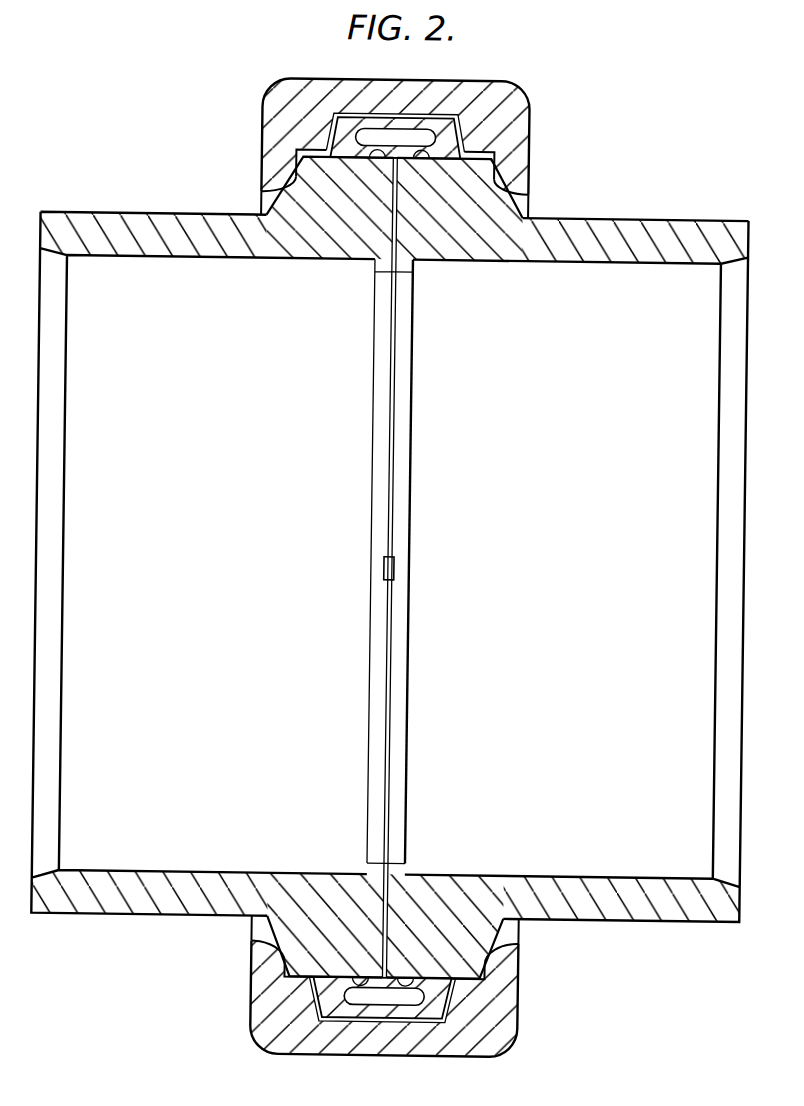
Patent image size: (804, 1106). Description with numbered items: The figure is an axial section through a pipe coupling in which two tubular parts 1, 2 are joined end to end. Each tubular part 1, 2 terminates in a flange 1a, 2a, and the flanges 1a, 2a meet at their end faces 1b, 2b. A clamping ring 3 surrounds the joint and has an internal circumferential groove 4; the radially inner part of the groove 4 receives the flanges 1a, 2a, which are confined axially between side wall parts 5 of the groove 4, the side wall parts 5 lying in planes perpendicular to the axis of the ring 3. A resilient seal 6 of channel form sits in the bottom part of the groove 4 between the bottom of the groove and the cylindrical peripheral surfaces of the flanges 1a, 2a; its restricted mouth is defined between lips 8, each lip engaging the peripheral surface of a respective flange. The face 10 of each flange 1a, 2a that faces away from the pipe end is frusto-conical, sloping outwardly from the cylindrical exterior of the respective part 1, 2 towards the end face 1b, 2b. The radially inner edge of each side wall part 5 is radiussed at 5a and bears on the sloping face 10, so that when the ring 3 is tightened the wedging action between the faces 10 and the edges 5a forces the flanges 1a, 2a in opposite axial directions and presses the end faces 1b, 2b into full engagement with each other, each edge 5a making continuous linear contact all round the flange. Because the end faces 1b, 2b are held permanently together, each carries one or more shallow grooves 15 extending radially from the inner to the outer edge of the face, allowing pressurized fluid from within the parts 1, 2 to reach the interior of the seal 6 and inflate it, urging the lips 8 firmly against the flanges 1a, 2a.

The tubular part 1 is at (169, 876).
The tubular part 2 is at (591, 875).
The flange 1a is at (307, 959).
The flange 2a is at (468, 959).
The end face 1b is at (395, 372).
The end face 2b is at (383, 407).
The clamping ring 3 is at (501, 98).
The internal circumferential groove 4 is at (345, 119).
The side wall part 5 is at (276, 998).
The radiussed edge 5a is at (275, 960).
The resilient seal 6 is at (441, 138).
The lip 8 is at (411, 156).
The face 10 is at (265, 930).
The shallow groove 15 is at (383, 261).